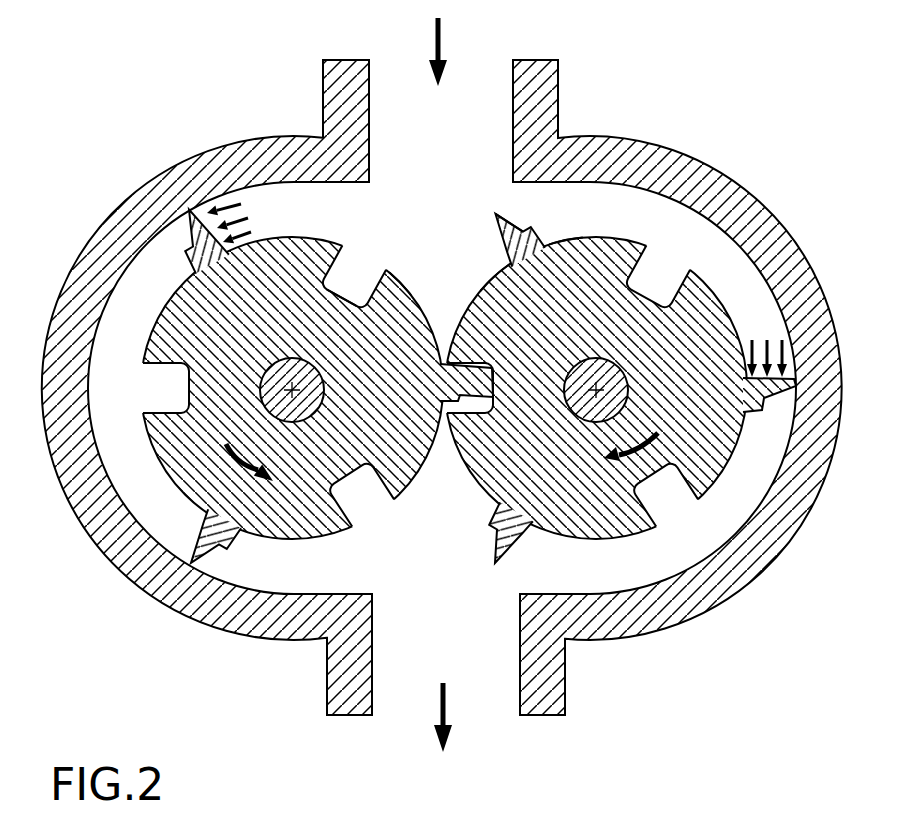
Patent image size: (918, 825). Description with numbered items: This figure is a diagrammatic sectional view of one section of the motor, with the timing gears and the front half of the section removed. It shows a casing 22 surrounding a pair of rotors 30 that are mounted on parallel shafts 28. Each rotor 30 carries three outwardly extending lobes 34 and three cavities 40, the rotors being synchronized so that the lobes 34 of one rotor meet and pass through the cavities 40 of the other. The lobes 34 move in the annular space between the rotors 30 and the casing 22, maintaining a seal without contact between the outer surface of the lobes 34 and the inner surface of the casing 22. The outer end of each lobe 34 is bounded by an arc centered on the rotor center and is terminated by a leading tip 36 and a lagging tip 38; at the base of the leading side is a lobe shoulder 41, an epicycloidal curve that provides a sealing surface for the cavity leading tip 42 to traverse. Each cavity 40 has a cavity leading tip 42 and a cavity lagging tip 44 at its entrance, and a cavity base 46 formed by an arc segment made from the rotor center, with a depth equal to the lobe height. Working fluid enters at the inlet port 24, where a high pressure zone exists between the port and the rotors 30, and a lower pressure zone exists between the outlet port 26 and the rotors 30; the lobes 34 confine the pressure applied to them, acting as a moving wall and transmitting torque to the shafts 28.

The casing 22 is at (165, 197).
The inlet port 24 is at (398, 78).
The outlet port 26 is at (403, 693).
The shaft 28 is at (333, 494).
The rotor 30 is at (718, 448).
The lobe 34 is at (512, 240).
The leading tip 36 is at (492, 212).
The lagging tip 38 is at (490, 212).
The cavity 40 is at (655, 266).
The lobe shoulder 41 is at (531, 238).
The cavity leading tip 42 is at (345, 243).
The cavity lagging tip 44 is at (386, 264).
The cavity base 46 is at (352, 304).